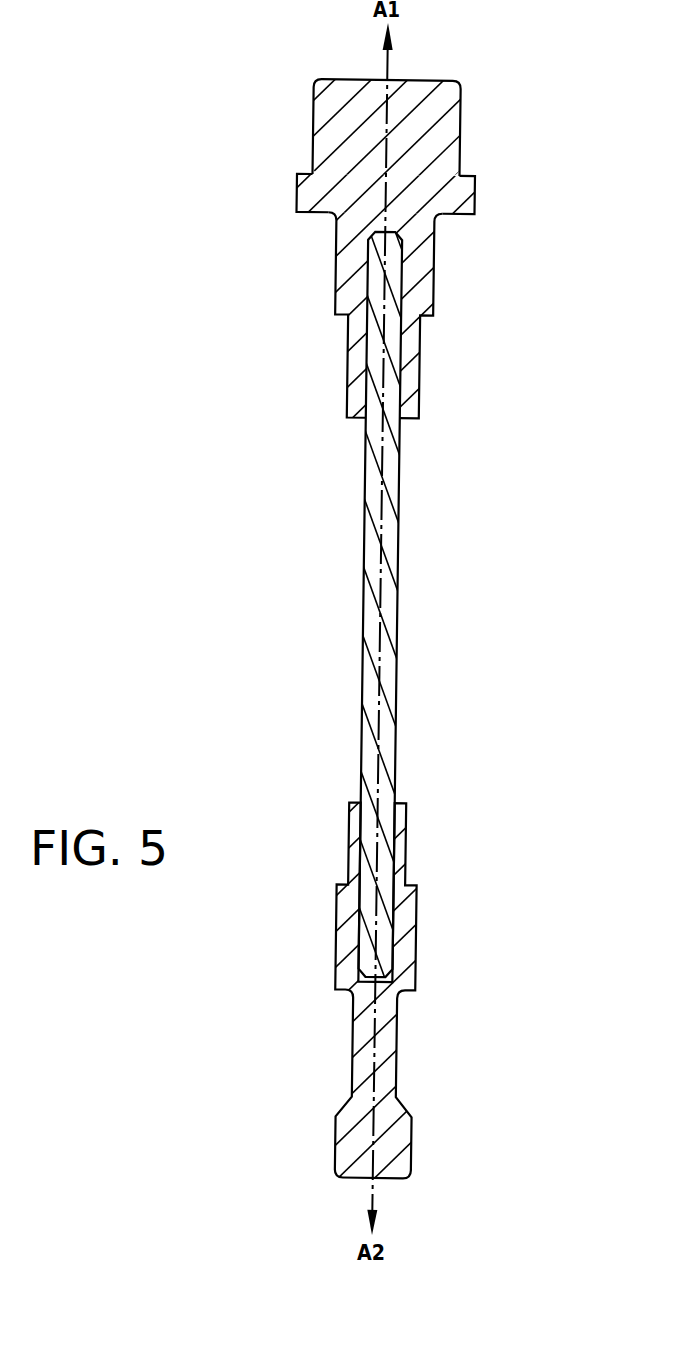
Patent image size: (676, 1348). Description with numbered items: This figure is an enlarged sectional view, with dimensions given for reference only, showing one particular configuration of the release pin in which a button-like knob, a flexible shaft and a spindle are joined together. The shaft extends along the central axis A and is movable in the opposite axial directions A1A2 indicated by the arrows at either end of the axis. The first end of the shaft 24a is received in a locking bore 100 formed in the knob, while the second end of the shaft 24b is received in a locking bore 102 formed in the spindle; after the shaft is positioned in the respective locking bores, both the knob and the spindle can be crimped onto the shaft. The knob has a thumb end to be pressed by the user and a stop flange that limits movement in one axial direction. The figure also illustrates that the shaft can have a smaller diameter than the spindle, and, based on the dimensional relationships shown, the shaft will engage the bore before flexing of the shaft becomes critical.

The first end of shaft 24a is at (379, 269).
The locking bore 100 is at (399, 372).
The axis A is at (383, 635).
The locking bore 102 is at (396, 850).
The second end of shaft 24b is at (370, 966).
The axial directions A1A2 is at (380, 629).